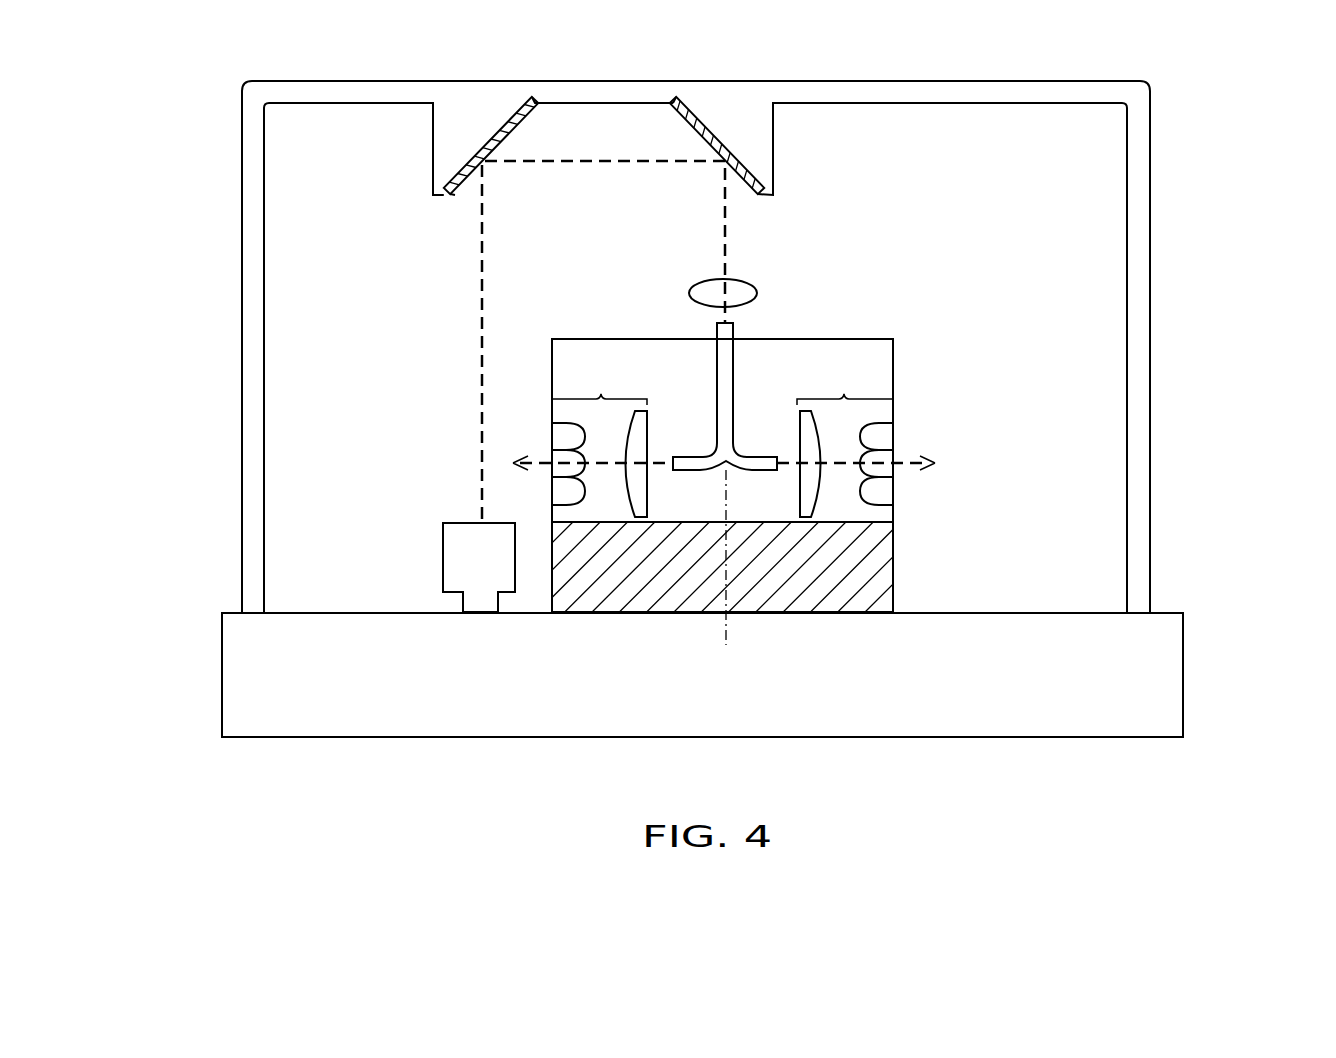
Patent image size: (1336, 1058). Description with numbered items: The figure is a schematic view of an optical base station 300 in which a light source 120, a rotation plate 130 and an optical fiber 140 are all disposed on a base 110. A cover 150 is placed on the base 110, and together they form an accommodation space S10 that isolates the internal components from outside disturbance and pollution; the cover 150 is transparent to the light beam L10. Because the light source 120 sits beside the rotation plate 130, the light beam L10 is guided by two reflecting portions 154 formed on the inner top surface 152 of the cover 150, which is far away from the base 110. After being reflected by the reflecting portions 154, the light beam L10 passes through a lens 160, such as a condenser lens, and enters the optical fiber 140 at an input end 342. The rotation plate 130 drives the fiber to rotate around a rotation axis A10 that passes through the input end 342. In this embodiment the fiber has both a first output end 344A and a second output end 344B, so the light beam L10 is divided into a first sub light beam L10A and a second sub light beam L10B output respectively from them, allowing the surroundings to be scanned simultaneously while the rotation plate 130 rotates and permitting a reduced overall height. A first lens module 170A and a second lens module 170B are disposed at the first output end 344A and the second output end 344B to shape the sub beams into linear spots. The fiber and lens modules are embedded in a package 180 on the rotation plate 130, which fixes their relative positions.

The base 110 is at (248, 684).
The light source 120 is at (450, 523).
The rotation plate 130 is at (873, 578).
The optical fiber 140 is at (725, 372).
The cover 150 is at (252, 498).
The inner top surface 152 is at (974, 105).
The reflecting portion 154 is at (500, 127).
The lens 160 is at (755, 283).
The first lens module 170A is at (600, 396).
The second lens module 170B is at (845, 396).
The package 180 is at (653, 338).
The optical base station 300 is at (1322, 727).
The input end 342 is at (735, 320).
The first output end 344A is at (673, 476).
The second output end 344B is at (777, 476).
The rotation axis A10 is at (726, 638).
The light beam L10 is at (478, 281).
The first sub light beam L10A is at (538, 443).
The second sub light beam L10B is at (913, 473).
The accommodation space S10 is at (300, 192).